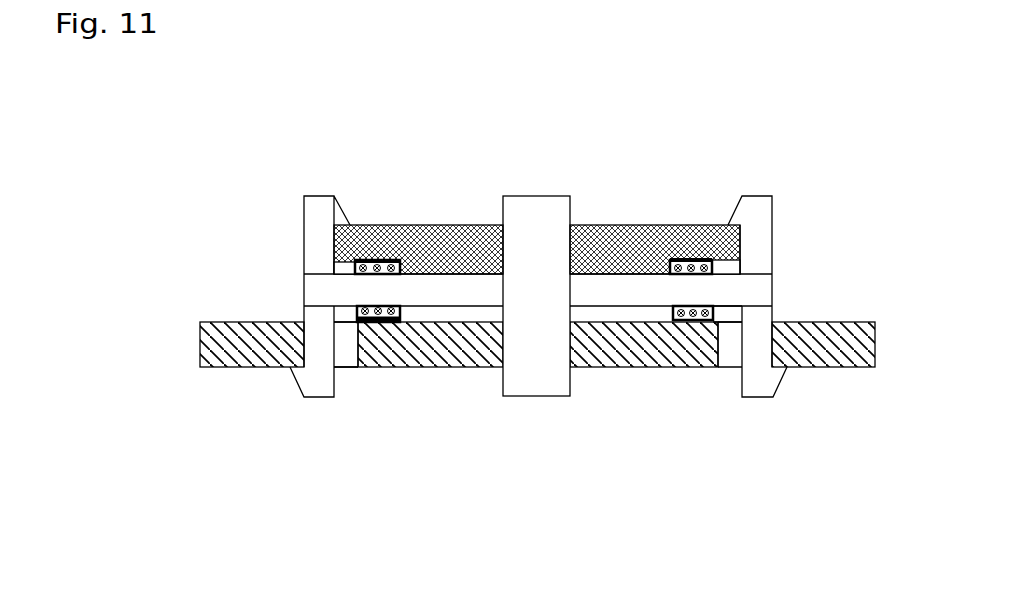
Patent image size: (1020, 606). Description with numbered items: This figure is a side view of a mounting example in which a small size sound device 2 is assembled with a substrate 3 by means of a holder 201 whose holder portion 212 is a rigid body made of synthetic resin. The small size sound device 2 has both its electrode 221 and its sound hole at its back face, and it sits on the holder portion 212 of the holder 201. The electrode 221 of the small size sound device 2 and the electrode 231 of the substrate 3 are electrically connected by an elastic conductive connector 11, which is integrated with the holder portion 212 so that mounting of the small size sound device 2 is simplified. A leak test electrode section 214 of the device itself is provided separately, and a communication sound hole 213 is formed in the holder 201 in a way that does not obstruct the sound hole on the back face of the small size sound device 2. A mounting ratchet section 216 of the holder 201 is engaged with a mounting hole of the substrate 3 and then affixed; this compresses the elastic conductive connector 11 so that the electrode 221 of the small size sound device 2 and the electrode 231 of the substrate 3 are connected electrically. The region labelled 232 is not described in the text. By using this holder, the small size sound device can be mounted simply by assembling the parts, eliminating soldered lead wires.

The small size sound device 2 is at (631, 204).
The substrate 3 is at (178, 353).
The elastic conductive connector 11 is at (357, 312).
The holder 201 is at (288, 256).
The holder portion 212 is at (750, 218).
The communication sound hole 213 is at (727, 313).
The leak test electrode section 214 is at (680, 224).
The mounting ratchet section 216 is at (316, 397).
The electrode 221 is at (376, 260).
The electrode 231 is at (358, 310).
The seal ring 232 is at (728, 345).